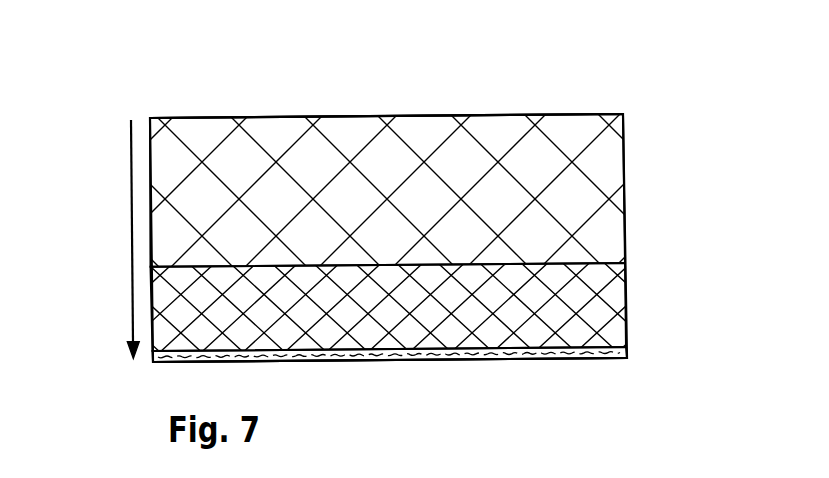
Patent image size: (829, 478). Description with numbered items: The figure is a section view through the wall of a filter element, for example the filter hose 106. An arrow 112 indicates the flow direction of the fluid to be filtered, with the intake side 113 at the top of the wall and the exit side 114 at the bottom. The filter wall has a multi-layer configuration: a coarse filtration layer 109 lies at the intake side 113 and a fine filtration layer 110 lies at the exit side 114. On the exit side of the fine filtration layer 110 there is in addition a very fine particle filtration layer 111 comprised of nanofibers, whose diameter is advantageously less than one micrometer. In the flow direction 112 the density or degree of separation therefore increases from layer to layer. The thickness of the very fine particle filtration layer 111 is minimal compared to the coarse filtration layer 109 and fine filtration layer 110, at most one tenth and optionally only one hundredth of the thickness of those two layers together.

The filter hose 106 is at (629, 85).
The coarse filtration layer 109 is at (608, 163).
The fine filtration layer 110 is at (618, 290).
The very fine particle filtration layer 111 is at (575, 355).
The arrow 112 is at (130, 225).
The intake side 113 is at (278, 117).
The exit side 114 is at (420, 360).